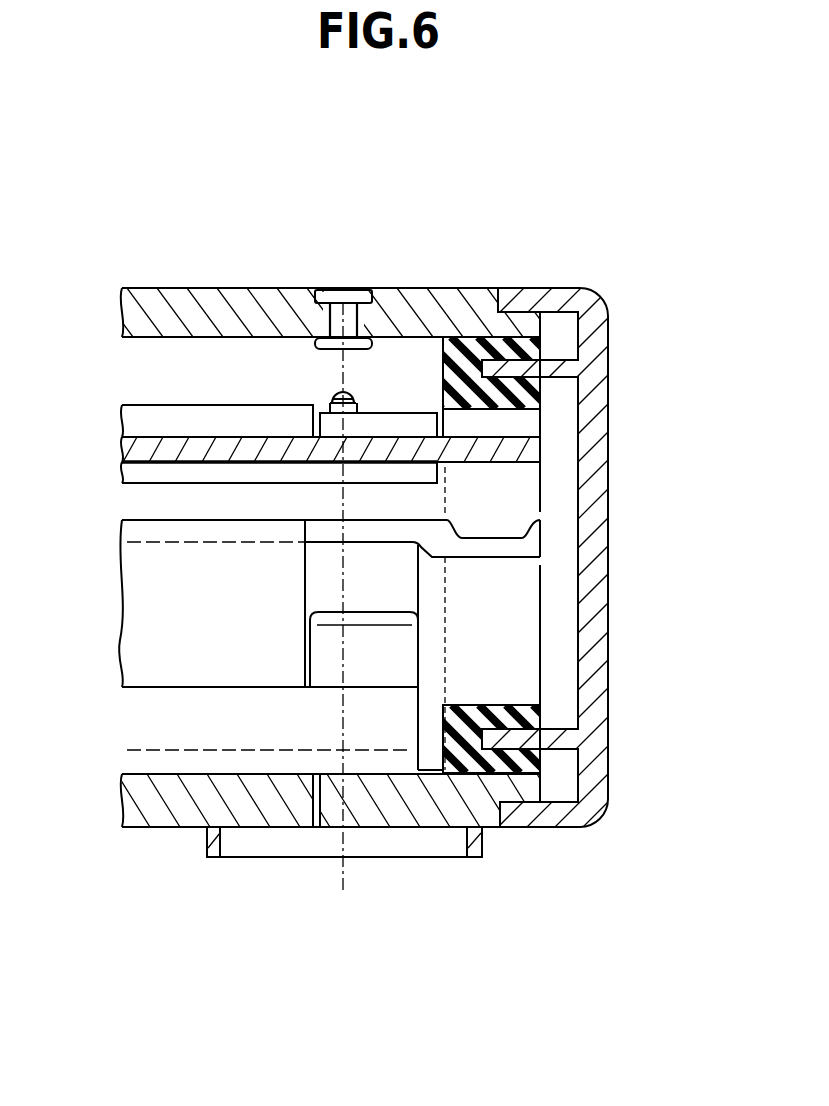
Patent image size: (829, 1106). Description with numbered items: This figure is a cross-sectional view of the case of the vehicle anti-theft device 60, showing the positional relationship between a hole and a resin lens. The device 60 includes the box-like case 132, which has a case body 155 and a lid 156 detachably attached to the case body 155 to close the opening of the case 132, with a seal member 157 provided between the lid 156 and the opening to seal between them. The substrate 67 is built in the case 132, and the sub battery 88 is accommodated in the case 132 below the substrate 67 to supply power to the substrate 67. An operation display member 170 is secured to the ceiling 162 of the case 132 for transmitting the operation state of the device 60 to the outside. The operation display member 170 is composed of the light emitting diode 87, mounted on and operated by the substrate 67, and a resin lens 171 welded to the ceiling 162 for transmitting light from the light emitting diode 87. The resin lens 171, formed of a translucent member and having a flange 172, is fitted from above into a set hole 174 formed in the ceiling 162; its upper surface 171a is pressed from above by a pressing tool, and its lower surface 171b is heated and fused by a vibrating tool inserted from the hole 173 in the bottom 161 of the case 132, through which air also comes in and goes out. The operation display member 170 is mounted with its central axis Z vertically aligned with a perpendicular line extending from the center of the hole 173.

The vehicle anti-theft device 60 is at (220, 243).
The box-like case 132 is at (263, 272).
The ceiling 162 is at (167, 288).
The operation display member 170 is at (352, 220).
The resin lens 171 is at (350, 322).
The upper surface of the resin lens 171a is at (348, 286).
The lower surface of the resin lens 171b is at (328, 346).
The flange 172 is at (323, 288).
The set hole 174 is at (345, 288).
The case body 155 is at (458, 285).
The lid 156 is at (608, 506).
The seal member 157 is at (485, 715).
The substrate 67 is at (520, 447).
The light emitting diode 87 is at (333, 389).
The sub battery 88 is at (172, 727).
The bottom 161 is at (180, 808).
The hole 173 is at (327, 807).
The central axis Z is at (343, 893).